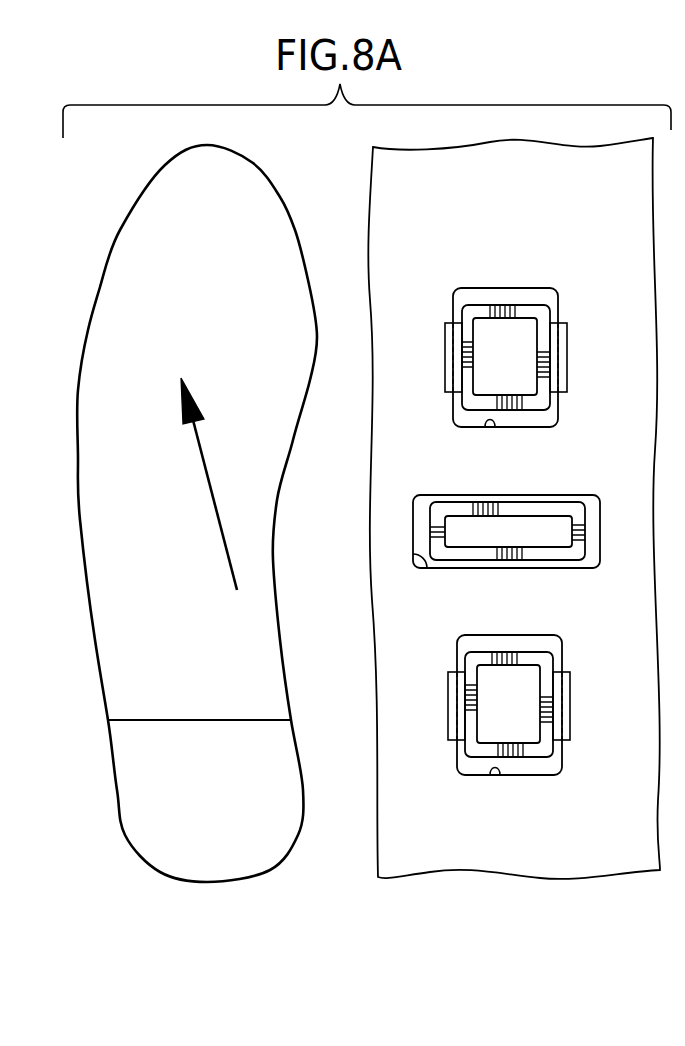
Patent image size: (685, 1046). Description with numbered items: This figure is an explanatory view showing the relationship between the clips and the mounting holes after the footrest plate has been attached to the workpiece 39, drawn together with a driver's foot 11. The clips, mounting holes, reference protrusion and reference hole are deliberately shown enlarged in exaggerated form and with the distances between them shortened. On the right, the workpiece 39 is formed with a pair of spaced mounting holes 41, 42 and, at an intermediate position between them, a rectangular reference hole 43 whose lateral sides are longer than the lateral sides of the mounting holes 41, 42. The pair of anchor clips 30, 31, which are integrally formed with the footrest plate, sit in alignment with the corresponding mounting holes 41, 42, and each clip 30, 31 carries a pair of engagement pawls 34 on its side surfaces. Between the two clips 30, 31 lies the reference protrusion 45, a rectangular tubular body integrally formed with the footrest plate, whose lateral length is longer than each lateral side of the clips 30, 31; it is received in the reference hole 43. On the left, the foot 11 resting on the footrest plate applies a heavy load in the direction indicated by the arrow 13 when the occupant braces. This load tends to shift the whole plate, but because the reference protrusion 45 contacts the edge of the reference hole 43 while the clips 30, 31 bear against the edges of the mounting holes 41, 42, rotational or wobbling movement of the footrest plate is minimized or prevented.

The foot 11 is at (258, 432).
The arrow 13 is at (215, 507).
The workpiece 39 is at (450, 228).
The clip 31 is at (534, 300).
The clip 30 is at (539, 649).
The reference protrusion 45 is at (560, 510).
The engagement pawl 34 is at (450, 357).
The mounting hole 42 is at (494, 424).
The mounting hole 41 is at (497, 765).
The reference hole 43 is at (418, 562).